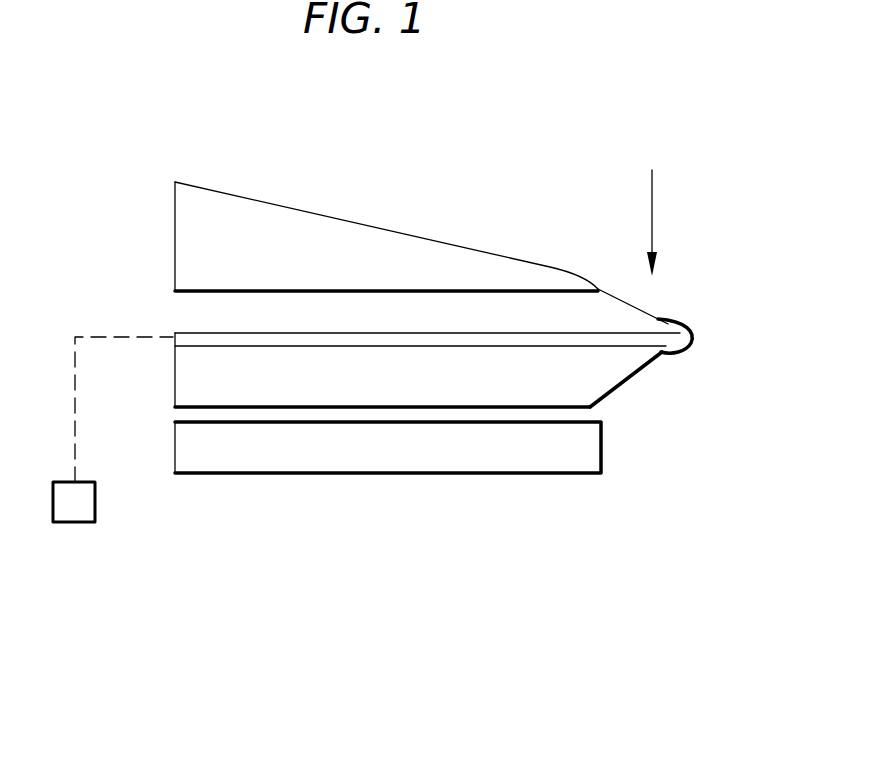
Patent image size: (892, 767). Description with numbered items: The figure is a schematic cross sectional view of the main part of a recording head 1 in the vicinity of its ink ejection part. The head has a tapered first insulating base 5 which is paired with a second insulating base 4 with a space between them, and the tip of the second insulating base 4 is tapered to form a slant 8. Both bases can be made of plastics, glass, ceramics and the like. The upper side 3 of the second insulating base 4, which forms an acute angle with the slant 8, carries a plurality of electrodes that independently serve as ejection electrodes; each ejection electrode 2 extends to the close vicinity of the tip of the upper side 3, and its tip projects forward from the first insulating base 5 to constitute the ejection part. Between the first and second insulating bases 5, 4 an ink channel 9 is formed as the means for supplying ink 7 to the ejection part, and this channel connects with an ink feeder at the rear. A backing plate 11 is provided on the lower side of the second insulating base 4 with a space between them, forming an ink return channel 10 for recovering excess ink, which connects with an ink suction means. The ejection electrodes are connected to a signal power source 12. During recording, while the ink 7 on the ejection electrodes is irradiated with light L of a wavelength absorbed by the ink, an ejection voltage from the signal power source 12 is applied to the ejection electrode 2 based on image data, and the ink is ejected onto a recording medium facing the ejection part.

The recording head 1 is at (681, 208).
The ejection electrode 2 is at (642, 342).
The upper side 3 is at (506, 348).
The second insulating base 4 is at (513, 395).
The first insulating base 5 is at (440, 250).
The ink 7 is at (632, 312).
The slant 8 is at (608, 397).
The ink channel 9 is at (280, 312).
The ink return channel 10 is at (445, 413).
The backing plate 11 is at (557, 462).
The signal power source 12 is at (85, 502).
The light L is at (651, 207).